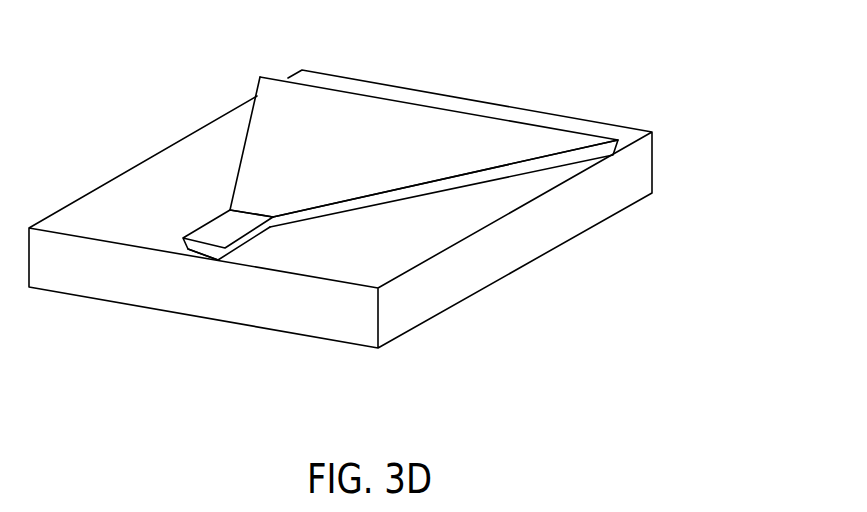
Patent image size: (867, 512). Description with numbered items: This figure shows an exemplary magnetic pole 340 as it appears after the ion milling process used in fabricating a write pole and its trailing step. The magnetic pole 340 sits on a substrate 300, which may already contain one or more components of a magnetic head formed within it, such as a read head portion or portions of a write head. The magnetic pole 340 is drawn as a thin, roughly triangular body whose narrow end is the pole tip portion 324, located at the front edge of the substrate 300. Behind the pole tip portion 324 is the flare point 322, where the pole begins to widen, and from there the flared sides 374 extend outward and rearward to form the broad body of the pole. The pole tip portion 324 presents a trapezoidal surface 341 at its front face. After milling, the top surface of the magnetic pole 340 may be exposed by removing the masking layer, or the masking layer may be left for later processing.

The substrate 300 is at (645, 175).
The magnetic pole 340 is at (427, 127).
The flared sides 374 is at (245, 146).
The pole tip portion 324 is at (208, 224).
The flare point 322 is at (253, 210).
The trapezoidal surface 341 is at (203, 250).